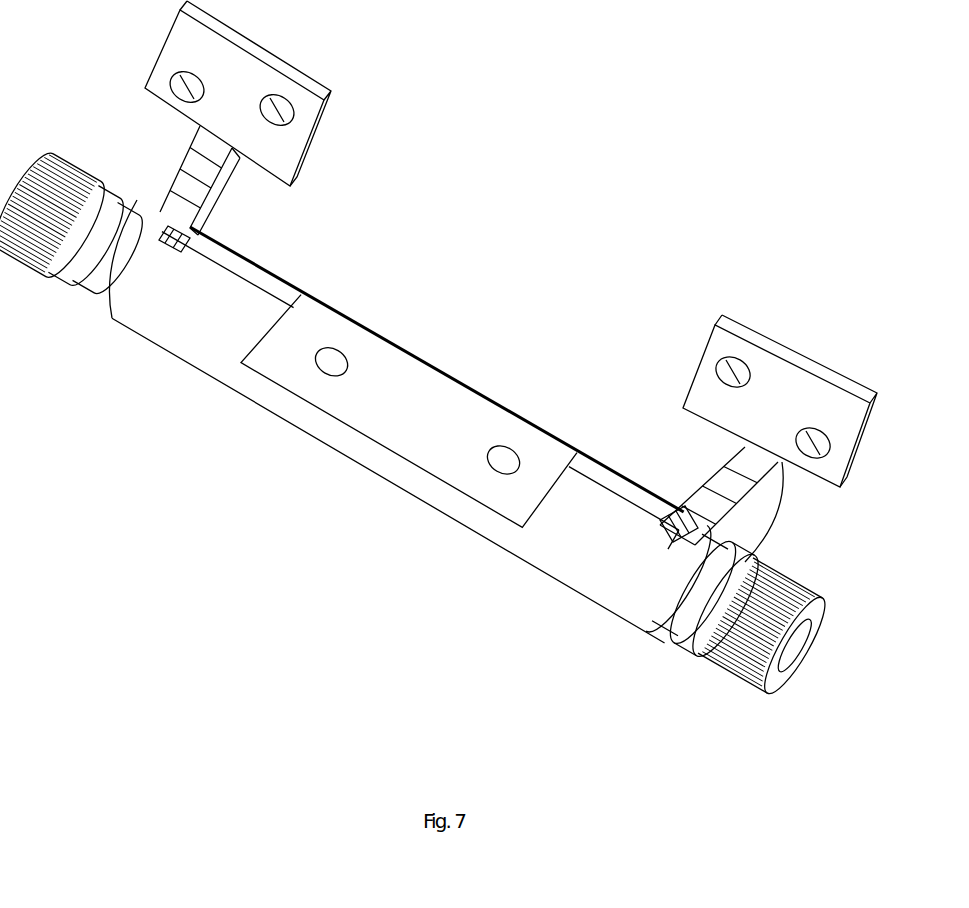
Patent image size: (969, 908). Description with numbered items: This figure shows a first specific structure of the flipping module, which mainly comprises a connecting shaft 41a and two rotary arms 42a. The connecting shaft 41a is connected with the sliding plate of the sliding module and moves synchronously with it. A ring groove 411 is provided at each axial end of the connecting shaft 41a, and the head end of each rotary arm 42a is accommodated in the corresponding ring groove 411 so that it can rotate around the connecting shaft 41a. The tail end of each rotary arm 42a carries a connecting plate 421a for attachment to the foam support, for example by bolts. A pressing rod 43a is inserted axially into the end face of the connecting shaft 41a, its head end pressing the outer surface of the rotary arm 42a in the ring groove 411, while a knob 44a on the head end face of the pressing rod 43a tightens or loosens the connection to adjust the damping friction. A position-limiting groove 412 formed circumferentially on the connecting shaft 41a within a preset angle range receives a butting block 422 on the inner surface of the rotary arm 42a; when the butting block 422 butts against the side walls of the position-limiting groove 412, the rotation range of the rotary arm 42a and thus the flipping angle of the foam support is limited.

The connecting shaft 41a is at (222, 305).
The ring groove 411 is at (690, 572).
The position-limiting groove 412 is at (668, 532).
The connecting plate 421a is at (770, 392).
The butting block 422 is at (187, 230).
The rotary arm 42a is at (182, 183).
The pressing rod 43a is at (712, 605).
The knob 44a is at (755, 638).